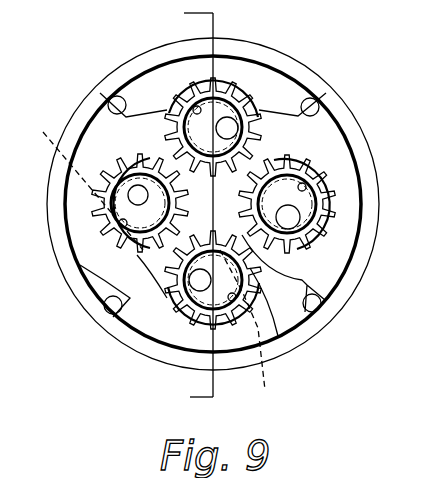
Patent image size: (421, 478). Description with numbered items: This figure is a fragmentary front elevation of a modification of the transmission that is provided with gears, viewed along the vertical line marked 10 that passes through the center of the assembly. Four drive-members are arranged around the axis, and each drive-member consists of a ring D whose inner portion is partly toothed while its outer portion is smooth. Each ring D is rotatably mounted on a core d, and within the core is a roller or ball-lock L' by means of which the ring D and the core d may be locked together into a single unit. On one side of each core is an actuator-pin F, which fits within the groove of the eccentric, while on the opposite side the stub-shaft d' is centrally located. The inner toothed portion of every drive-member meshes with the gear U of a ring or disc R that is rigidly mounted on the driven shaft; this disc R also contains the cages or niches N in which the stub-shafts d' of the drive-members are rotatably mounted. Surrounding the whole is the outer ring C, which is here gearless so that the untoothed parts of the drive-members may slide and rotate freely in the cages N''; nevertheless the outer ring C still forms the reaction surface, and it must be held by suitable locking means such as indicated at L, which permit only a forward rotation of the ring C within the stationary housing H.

The section line 10 is at (187, 208).
The outer ring C is at (323, 187).
The stationary housing H is at (283, 67).
The ring D is at (231, 90).
The actuator-pin F is at (293, 137).
The core d is at (218, 174).
The roller or ball-lock L' is at (205, 166).
The locking means L is at (133, 71).
The cages N'' is at (193, 112).
The ring or disc R is at (160, 278).
The gear U is at (283, 333).
The stub-shaft d' is at (85, 183).
The cages or niches N is at (247, 329).